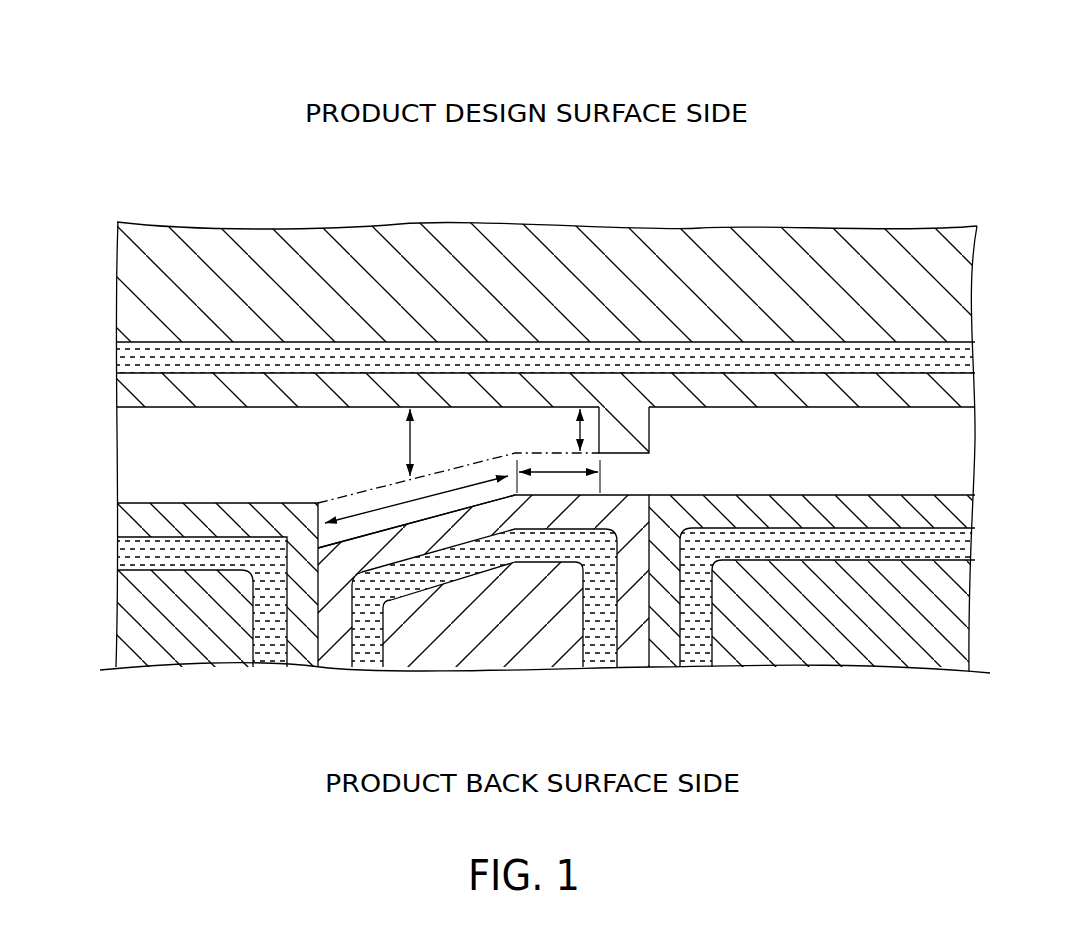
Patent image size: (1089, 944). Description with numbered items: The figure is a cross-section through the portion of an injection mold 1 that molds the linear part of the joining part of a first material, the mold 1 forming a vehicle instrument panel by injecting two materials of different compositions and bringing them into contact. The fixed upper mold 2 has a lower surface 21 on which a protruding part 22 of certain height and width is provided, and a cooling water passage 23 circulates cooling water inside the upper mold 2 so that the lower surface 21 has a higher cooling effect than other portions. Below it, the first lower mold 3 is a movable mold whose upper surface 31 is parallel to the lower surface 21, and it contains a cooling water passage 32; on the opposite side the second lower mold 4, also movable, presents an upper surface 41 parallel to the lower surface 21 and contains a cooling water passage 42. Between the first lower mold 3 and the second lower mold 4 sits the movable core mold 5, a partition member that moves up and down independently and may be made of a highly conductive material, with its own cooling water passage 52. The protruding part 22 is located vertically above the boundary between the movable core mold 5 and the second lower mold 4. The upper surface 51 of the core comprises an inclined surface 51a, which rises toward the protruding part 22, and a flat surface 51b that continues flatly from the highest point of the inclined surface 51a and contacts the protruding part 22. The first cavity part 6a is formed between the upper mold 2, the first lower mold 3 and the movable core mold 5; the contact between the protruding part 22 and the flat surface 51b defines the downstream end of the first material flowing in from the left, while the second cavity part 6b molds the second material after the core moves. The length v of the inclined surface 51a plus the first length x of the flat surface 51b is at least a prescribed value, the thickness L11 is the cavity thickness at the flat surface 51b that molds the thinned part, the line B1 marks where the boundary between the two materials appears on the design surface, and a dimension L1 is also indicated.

The injection mold 1 is at (772, 85).
The upper mold 2 is at (143, 283).
The lower surface 21 is at (277, 411).
The protruding part 22 is at (627, 437).
The cooling water passage 23 is at (958, 361).
The first lower mold 3 is at (145, 633).
The upper surface 31 is at (157, 500).
The cooling water passage 32 is at (268, 652).
The second lower mold 4 is at (838, 650).
The upper surface 41 is at (925, 493).
The cooling water passage 42 is at (697, 652).
The movable core mold 5 is at (492, 650).
The upper surface 51 is at (553, 530).
The inclined surface 51a is at (450, 513).
The flat surface 51b is at (600, 496).
The cooling water passage 52 is at (370, 650).
The first cavity part 6a is at (143, 455).
The second cavity part 6b is at (958, 453).
The length of the inclined surface v is at (364, 506).
The first length of the flat surface x is at (556, 475).
The line B1 is at (363, 494).
The distance L1 is at (392, 442).
The thickness L11 is at (556, 430).